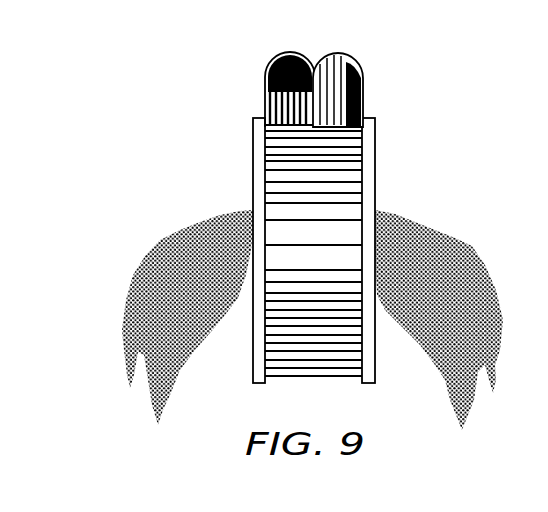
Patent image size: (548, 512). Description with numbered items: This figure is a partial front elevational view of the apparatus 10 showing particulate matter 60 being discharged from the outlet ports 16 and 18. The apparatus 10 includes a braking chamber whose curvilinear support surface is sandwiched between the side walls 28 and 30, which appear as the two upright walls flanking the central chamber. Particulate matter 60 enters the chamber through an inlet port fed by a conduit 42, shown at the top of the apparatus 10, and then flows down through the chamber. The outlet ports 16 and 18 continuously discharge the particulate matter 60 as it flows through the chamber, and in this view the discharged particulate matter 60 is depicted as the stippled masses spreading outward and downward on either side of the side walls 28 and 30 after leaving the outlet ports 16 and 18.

The apparatus 10 is at (284, 213).
The outlet port 16 is at (250, 215).
The outlet port 18 is at (380, 217).
The side wall 28 is at (370, 372).
The side wall 30 is at (255, 378).
The conduit 42 is at (358, 62).
The particulate matter 60 is at (108, 328).